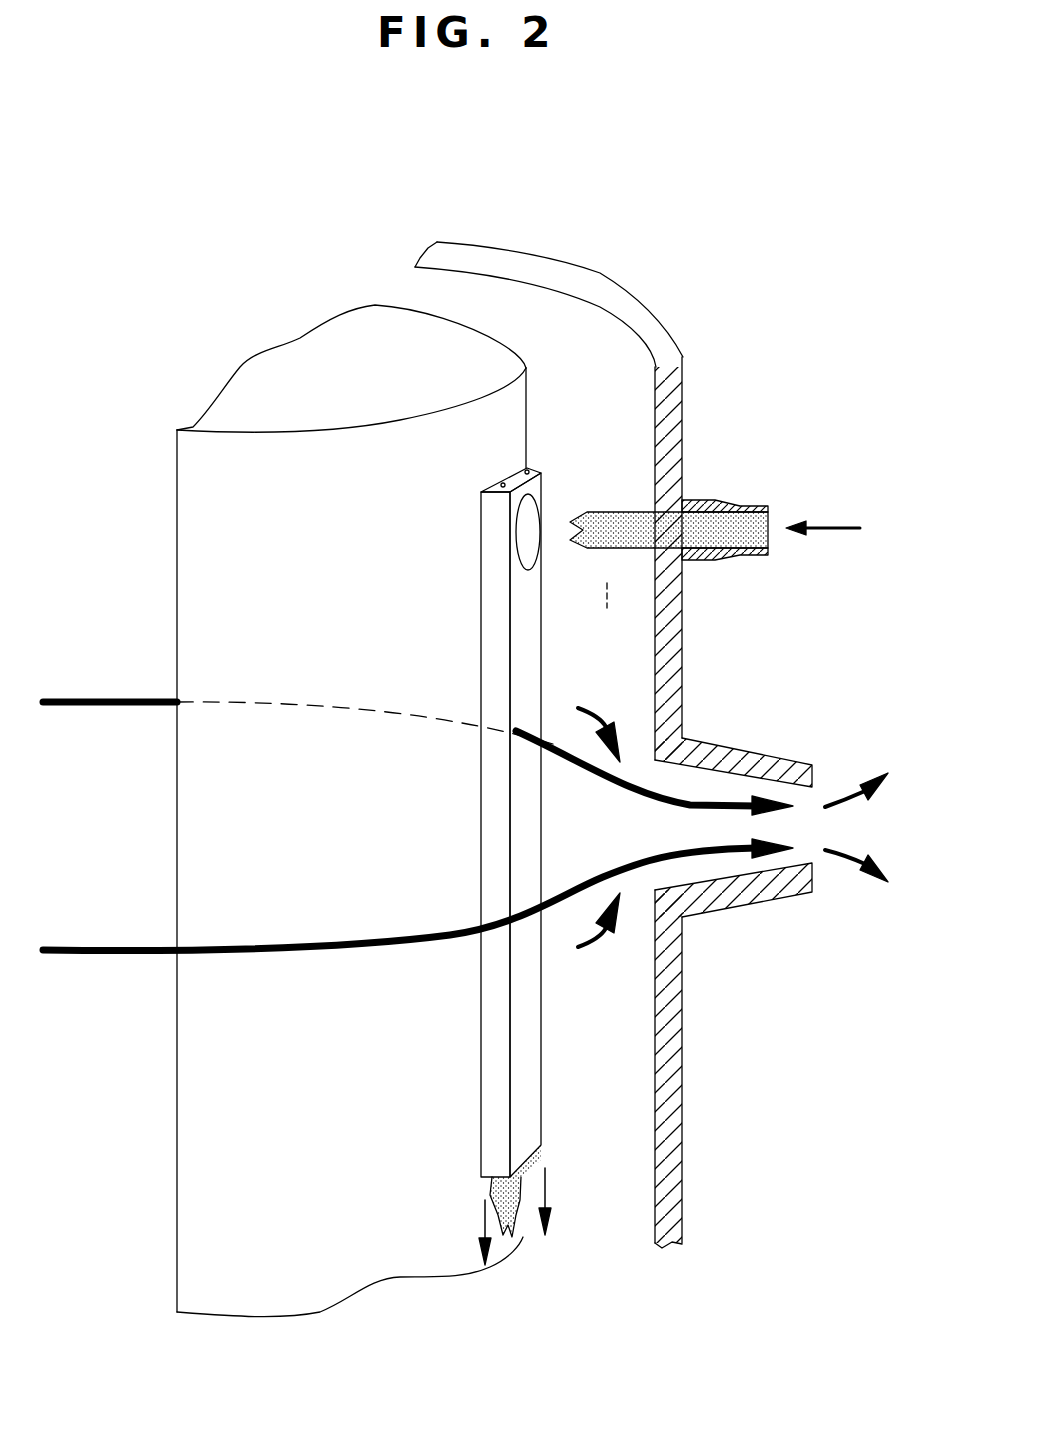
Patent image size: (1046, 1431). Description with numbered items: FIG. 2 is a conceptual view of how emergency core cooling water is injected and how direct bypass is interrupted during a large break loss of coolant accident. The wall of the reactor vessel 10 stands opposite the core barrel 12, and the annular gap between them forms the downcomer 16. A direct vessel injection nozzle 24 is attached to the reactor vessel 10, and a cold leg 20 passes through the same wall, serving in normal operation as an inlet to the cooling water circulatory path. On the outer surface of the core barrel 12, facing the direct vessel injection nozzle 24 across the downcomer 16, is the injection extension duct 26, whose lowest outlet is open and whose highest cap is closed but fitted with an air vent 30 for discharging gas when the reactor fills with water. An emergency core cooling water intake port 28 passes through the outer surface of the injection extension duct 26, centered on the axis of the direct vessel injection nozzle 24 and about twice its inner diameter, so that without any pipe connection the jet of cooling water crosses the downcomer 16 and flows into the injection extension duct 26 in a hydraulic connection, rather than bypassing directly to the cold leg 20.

The reactor vessel 10 is at (667, 1153).
The core barrel 12 is at (483, 353).
The downcomer 16 is at (607, 594).
The cold leg 20 is at (777, 753).
The direct vessel injection nozzle 24 is at (693, 504).
The injection extension duct 26 is at (523, 640).
The emergency core cooling water intake port 28 is at (530, 515).
The air vent 30 is at (530, 467).